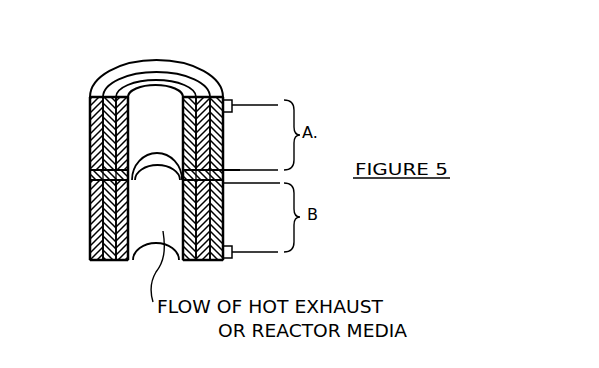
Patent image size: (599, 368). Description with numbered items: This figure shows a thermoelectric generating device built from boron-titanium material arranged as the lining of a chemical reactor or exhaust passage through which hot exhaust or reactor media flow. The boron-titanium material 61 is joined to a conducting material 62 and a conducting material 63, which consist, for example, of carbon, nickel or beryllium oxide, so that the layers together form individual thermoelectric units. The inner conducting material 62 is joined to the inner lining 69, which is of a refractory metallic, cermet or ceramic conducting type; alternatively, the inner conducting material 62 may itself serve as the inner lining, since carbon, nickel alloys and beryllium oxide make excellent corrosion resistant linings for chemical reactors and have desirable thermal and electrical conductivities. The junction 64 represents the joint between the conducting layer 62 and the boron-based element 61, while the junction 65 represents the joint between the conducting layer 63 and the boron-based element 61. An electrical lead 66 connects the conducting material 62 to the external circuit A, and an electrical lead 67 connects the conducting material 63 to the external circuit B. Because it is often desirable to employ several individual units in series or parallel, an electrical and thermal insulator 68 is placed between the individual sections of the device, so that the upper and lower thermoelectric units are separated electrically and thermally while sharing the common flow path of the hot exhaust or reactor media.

The boron-titanium material 61 is at (115, 87).
The inner conducting material 62 is at (127, 90).
The conducting material 63 is at (94, 210).
The junction 64 is at (118, 120).
The junction 65 is at (103, 155).
The electrical lead 66 is at (233, 103).
The electrical lead 67 is at (232, 170).
The electrical and thermal insulator 68 is at (93, 180).
The inner lining 69 is at (133, 256).